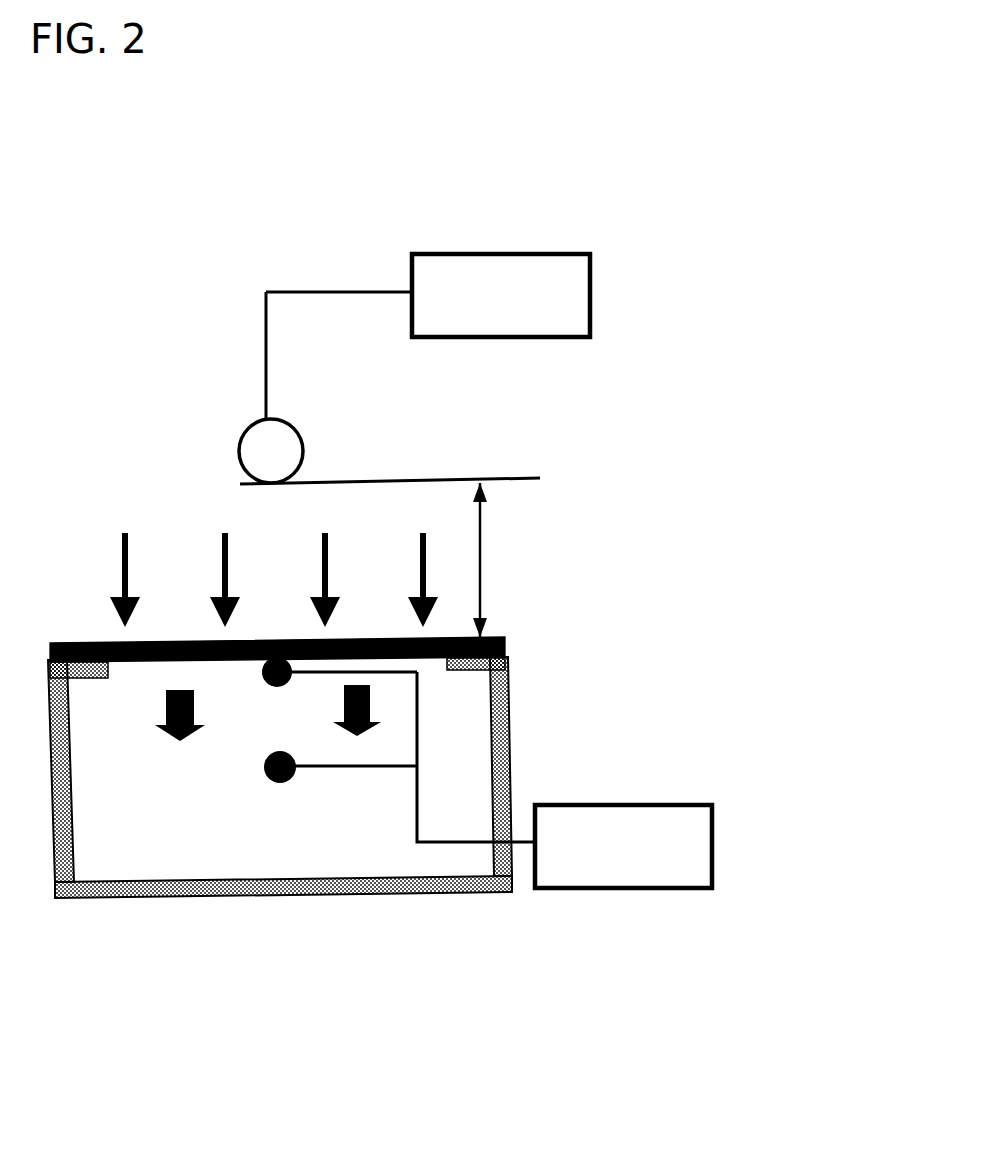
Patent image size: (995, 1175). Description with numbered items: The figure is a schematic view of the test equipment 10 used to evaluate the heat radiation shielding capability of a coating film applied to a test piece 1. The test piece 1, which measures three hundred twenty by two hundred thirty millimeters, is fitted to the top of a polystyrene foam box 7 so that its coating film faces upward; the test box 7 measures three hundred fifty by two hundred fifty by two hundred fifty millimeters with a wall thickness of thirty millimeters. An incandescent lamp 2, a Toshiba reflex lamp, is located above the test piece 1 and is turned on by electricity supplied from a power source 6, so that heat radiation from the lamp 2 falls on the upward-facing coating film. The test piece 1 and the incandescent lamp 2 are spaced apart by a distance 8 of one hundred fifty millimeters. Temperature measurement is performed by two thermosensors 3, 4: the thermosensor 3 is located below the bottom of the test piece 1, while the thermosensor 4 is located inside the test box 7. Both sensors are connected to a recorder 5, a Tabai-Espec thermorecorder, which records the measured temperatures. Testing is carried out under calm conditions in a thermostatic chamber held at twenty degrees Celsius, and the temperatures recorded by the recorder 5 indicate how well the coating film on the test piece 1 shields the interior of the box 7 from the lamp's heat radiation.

The test piece 1 is at (505, 643).
The incandescent lamp 2 is at (238, 450).
The thermosensor 3 is at (265, 688).
The thermosensor 4 is at (265, 780).
The recorder 5 is at (633, 807).
The power source 6 is at (590, 285).
The polystyrene foam box 7 is at (193, 897).
The distance 8 is at (499, 560).
The test equipment 10 is at (638, 540).